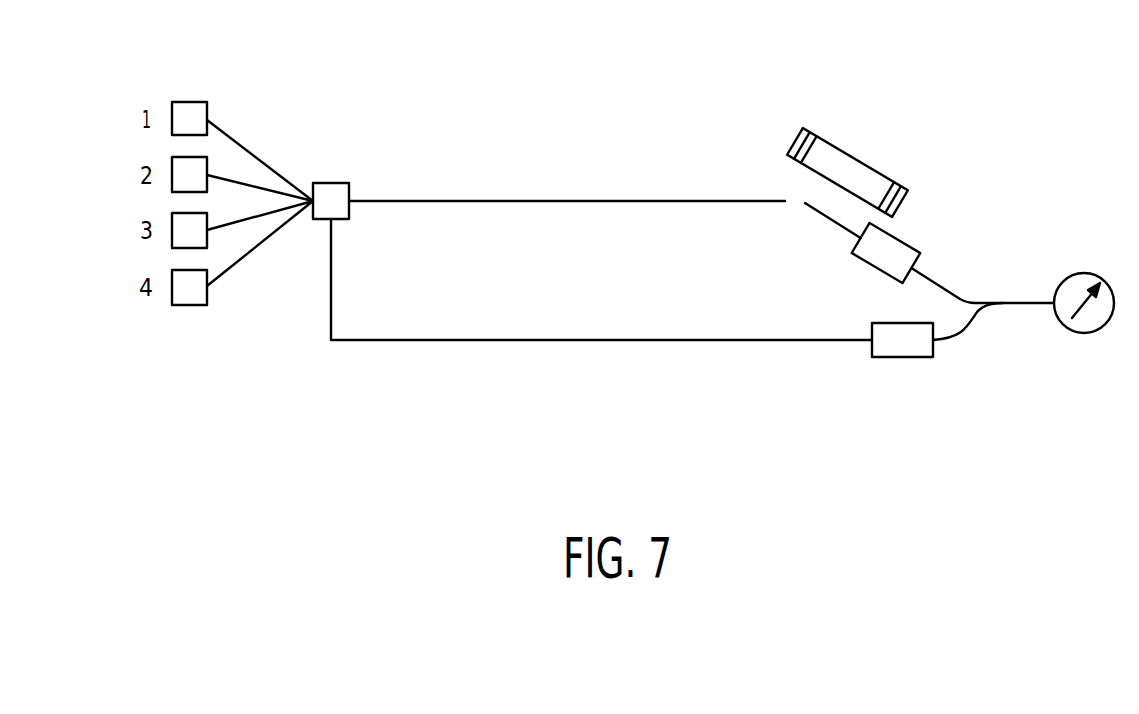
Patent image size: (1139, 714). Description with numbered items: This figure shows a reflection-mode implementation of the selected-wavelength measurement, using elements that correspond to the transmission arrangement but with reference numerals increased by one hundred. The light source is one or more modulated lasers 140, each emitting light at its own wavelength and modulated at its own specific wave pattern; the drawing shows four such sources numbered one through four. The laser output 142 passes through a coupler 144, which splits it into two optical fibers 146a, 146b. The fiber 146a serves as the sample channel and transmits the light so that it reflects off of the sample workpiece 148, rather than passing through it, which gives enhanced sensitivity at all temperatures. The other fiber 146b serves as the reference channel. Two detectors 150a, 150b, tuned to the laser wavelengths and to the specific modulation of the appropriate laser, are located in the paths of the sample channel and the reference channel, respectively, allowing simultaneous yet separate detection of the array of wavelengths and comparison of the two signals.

The modulated laser 140 is at (190, 102).
The laser output 142 is at (250, 150).
The coupler 144 is at (338, 183).
The sample channel optical fiber 146a is at (503, 197).
The reference channel optical fiber 146b is at (563, 340).
The sample workpiece 148 is at (825, 140).
The sample channel detector 150a is at (915, 243).
The reference channel detector 150b is at (913, 357).